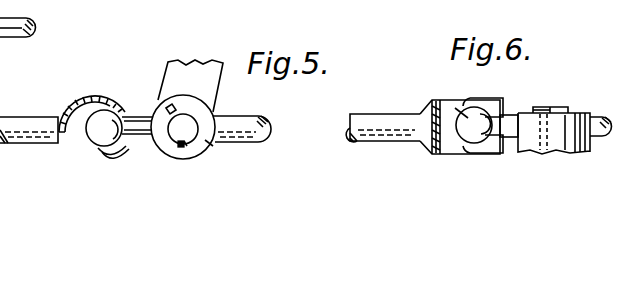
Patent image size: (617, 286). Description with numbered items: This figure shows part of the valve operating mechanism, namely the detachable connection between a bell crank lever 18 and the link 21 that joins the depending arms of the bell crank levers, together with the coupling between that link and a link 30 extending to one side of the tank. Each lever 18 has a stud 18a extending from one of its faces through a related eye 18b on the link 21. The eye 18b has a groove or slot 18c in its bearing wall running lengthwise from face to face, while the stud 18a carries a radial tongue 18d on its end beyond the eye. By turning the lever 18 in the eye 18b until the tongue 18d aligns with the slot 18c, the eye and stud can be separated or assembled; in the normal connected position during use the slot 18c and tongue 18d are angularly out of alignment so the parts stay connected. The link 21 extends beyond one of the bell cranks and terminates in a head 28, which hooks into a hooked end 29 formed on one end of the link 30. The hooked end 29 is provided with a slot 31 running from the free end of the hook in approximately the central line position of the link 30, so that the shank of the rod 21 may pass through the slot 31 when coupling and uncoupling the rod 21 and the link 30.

In FIG. 5, the bell crank lever 18 is at (198, 63).
In FIG. 5, the stud 18a is at (180, 124).
In FIG. 6, the stud 18a is at (566, 107).
In FIG. 5, the eye 18b is at (203, 140).
In FIG. 5, the slot 18c is at (168, 108).
In FIG. 6, the slot 18c is at (537, 137).
In FIG. 5, the radial tongue 18d is at (185, 148).
In FIG. 6, the radial tongue 18d is at (553, 107).
In FIG. 5, the link 21 is at (246, 116).
In FIG. 6, the link 21 is at (507, 112).
In FIG. 5, the head 28 is at (100, 130).
In FIG. 5, the hooked end 29 is at (95, 96).
In FIG. 6, the hooked end 29 is at (483, 148).
In FIG. 5, the link 30 is at (30, 118).
In FIG. 6, the link 30 is at (382, 115).
In FIG. 5, the slot 31 is at (120, 150).
In FIG. 6, the slot 31 is at (465, 112).